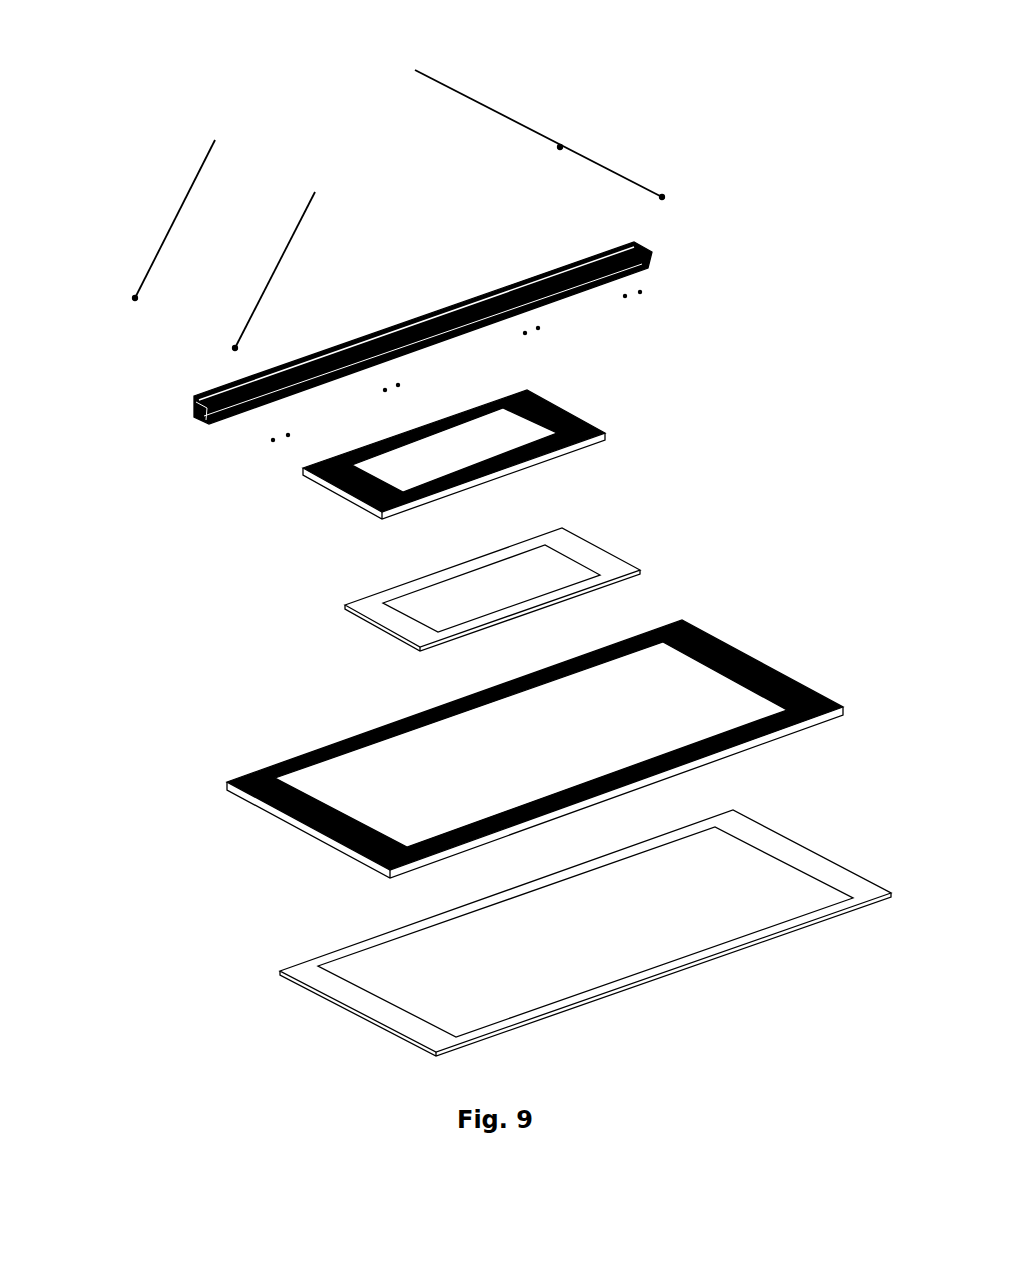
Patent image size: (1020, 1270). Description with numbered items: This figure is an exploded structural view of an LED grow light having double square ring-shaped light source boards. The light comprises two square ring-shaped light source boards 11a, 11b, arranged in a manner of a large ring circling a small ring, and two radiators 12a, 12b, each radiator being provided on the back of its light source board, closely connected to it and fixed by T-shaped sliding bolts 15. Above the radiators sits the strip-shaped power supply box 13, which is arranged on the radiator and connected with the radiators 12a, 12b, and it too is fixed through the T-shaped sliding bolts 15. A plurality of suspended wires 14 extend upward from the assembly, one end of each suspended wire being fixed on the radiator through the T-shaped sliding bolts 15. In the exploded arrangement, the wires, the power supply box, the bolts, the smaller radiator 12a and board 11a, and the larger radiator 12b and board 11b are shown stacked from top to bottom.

The suspended wires 14 is at (148, 253).
The power supply box 13 is at (238, 383).
The T-shaped sliding bolt 15 is at (267, 442).
The radiator 12a is at (337, 483).
The square ring-shaped light source board 11a is at (345, 607).
The radiator 12b is at (238, 795).
The square ring-shaped light source board 11b is at (358, 1025).